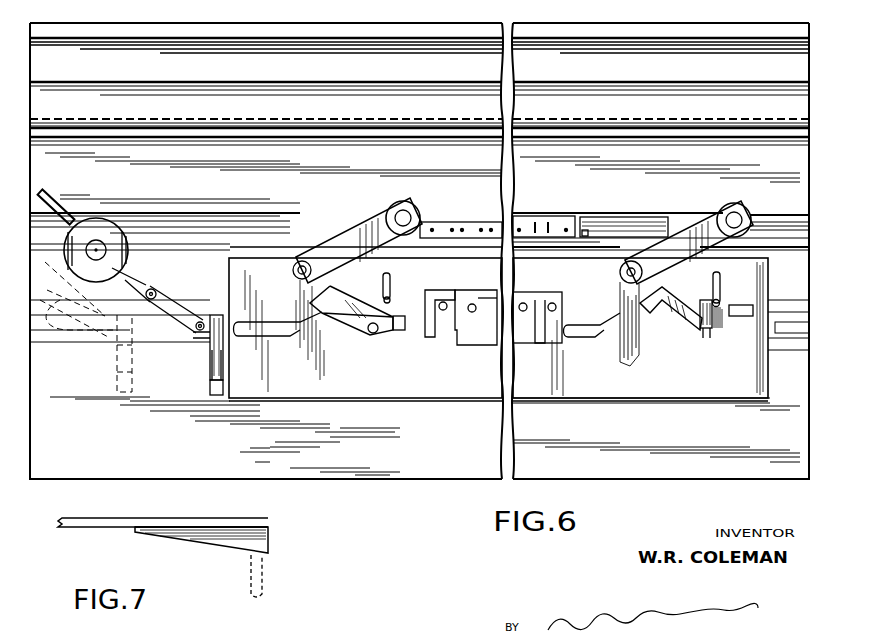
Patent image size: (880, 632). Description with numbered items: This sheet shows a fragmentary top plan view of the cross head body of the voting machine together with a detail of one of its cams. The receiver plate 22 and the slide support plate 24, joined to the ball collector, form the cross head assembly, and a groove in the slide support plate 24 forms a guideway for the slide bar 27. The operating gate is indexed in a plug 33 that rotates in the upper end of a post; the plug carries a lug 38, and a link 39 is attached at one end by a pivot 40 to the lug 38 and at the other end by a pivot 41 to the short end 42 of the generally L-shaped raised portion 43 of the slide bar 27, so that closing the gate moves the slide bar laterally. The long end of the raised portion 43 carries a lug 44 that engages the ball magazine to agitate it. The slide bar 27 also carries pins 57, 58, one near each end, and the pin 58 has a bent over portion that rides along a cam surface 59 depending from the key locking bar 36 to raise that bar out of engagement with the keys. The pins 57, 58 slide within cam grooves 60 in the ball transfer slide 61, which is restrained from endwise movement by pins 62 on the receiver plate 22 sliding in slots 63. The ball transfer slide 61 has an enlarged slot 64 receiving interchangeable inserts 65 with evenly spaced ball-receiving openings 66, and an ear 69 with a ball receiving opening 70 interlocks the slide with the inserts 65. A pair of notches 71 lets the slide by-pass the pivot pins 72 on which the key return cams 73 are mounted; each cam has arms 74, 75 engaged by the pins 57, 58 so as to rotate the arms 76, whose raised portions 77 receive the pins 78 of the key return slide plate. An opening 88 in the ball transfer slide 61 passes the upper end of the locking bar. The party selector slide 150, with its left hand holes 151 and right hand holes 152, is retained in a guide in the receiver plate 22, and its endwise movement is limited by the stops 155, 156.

In FIG. 6, the receiver plate 22 is at (383, 34).
In FIG. 6, the slide support plate 24 is at (405, 478).
In FIG. 6, the slide bar 27 is at (263, 333).
In FIG. 6, the plug 33 is at (96, 217).
In FIG. 7, the key locking bar 36 is at (104, 505).
In FIG. 6, the lug 38 is at (140, 272).
In FIG. 6, the link 39 is at (170, 301).
In FIG. 6, the pivot 40 is at (146, 291).
In FIG. 6, the pivot 41 is at (198, 332).
In FIG. 6, the short end 42 is at (209, 315).
In FIG. 6, the raised portion 43 is at (212, 370).
In FIG. 6, the lug 44 is at (212, 386).
In FIG. 6, the pin 57 is at (372, 330).
In FIG. 6, the pin 58 is at (708, 330).
In FIG. 7, the pin 58 is at (262, 562).
In FIG. 7, the cam surface 59 is at (270, 538).
In FIG. 6, the cam grooves 60 is at (304, 331).
In FIG. 6, the ball transfer slide 61 is at (364, 394).
In FIG. 6, the pins 62 is at (391, 298).
In FIG. 6, the slots 63 is at (391, 280).
In FIG. 6, the enlarged slot 64 is at (469, 344).
In FIG. 6, the interchangeable inserts 65 is at (479, 300).
In FIG. 6, the ball-receiving openings 66 is at (472, 310).
In FIG. 6, the ear 69 is at (437, 326).
In FIG. 6, the ball receiving opening 70 is at (443, 302).
In FIG. 6, the notches 71 is at (290, 263).
In FIG. 6, the pivot pins 72 is at (298, 276).
In FIG. 6, the key return cams 73 is at (339, 222).
In FIG. 6, the arm 74 is at (299, 348).
In FIG. 6, the arm 75 is at (396, 318).
In FIG. 6, the arms 76 is at (368, 230).
In FIG. 6, the raised portion 77 is at (415, 206).
In FIG. 6, the pins 78 is at (410, 217).
In FIG. 6, the opening 88 is at (740, 318).
In FIG. 6, the party selector slide 150 is at (552, 230).
In FIG. 6, the left hand holes 151 is at (486, 240).
In FIG. 6, the right hand holes 152 is at (481, 226).
In FIG. 6, the stop 155 is at (591, 231).
In FIG. 6, the stop 156 is at (416, 247).